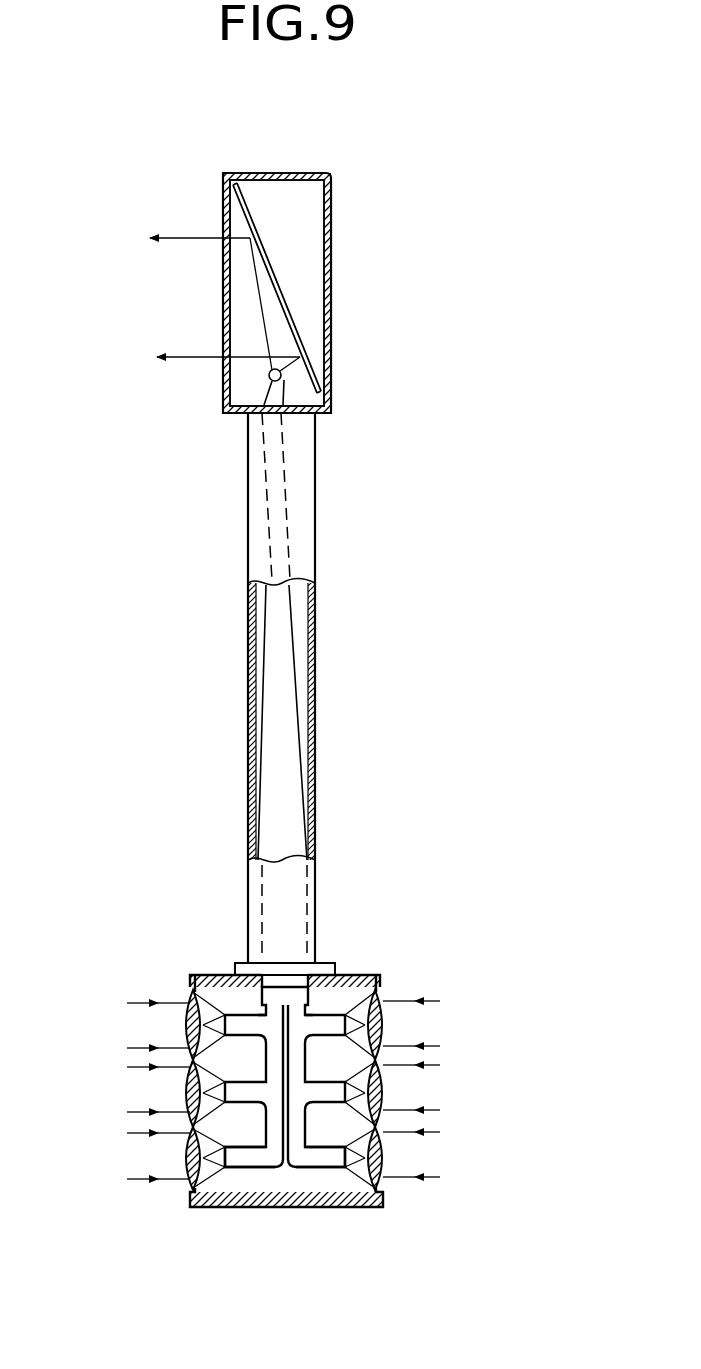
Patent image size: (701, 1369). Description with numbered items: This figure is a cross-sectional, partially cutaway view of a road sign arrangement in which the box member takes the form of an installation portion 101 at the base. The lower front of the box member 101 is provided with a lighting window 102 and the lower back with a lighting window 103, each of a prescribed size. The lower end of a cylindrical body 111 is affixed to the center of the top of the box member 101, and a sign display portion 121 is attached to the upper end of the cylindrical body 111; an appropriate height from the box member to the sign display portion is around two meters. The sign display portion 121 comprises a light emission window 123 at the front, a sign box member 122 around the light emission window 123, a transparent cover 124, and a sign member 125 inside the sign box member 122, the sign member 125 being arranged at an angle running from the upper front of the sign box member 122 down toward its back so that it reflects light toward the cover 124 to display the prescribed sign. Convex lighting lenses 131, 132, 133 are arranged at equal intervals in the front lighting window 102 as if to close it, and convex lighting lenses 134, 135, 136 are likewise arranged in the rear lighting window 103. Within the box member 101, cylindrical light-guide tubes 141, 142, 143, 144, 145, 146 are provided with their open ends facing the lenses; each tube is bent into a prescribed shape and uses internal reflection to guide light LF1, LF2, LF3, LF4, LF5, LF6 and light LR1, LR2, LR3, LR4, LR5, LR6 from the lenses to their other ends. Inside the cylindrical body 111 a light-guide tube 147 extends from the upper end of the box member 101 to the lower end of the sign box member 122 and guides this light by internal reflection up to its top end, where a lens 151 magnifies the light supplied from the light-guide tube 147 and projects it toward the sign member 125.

The installation portion 101 is at (287, 1205).
The lighting window 102 is at (200, 977).
The lighting window 103 is at (362, 973).
The cylindrical body 111 is at (300, 522).
The sign display portion 121 is at (337, 175).
The sign box member 122 is at (330, 330).
The light emission window 123 is at (243, 295).
The transparent cover 124 is at (227, 200).
The sign member 125 is at (278, 283).
The convex lighting lens 131 is at (186, 1177).
The convex lighting lens 132 is at (190, 1090).
The convex lighting lens 133 is at (188, 1010).
The convex lighting lens 134 is at (388, 1165).
The convex lighting lens 135 is at (383, 1090).
The convex lighting lens 136 is at (383, 1017).
The light-guide tube 141 is at (257, 1160).
The light-guide tube 142 is at (230, 1162).
The light-guide tube 143 is at (242, 1022).
The light-guide tube 144 is at (322, 1162).
The light-guide tube 145 is at (348, 1162).
The light-guide tube 146 is at (333, 1022).
The light-guide tube 147 is at (318, 697).
The lens 151 is at (270, 374).
The light LF1 is at (132, 1182).
The light LF2 is at (132, 1137).
The light LF3 is at (132, 1113).
The light LF4 is at (132, 1070).
The light LF5 is at (132, 1048).
The light LF6 is at (132, 1005).
The light LR1 is at (441, 1180).
The light LR2 is at (441, 1137).
The light LR3 is at (441, 1110).
The light LR4 is at (441, 1070).
The light LR5 is at (441, 1043).
The light LR6 is at (441, 1005).